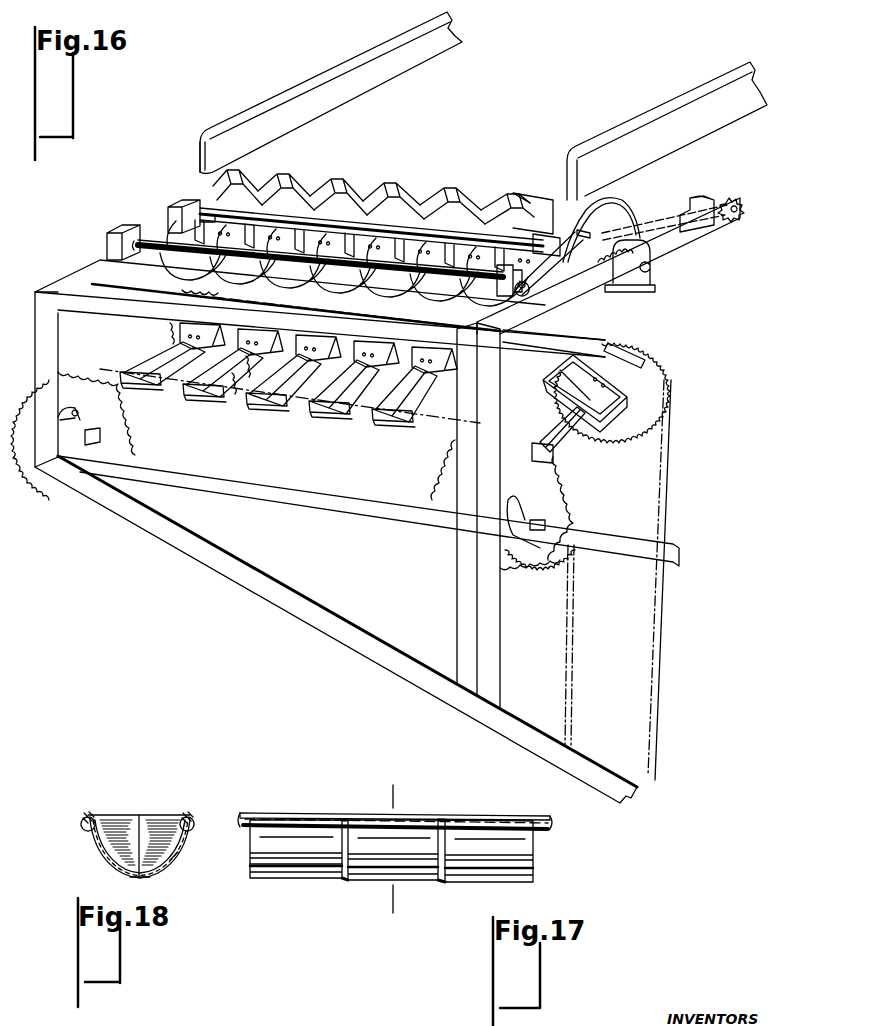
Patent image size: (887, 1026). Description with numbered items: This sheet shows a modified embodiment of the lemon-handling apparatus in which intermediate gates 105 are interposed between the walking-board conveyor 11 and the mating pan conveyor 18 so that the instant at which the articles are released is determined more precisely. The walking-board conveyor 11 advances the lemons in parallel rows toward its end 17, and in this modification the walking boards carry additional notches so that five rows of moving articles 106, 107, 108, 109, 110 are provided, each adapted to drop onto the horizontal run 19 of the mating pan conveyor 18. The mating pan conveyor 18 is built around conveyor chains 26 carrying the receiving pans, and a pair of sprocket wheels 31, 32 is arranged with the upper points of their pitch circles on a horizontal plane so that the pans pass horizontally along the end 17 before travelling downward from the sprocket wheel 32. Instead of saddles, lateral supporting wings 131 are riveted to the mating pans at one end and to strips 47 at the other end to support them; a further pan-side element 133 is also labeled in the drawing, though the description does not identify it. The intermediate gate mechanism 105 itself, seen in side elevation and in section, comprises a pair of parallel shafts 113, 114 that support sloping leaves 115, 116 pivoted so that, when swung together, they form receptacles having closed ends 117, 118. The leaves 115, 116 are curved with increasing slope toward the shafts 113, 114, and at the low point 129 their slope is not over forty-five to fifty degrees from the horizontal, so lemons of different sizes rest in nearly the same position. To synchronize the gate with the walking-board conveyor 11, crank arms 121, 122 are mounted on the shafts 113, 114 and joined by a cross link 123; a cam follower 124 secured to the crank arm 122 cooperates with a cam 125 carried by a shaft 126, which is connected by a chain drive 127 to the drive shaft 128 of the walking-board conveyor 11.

In FIG. 16, the walking-board conveyor 11 is at (303, 72).
In FIG. 16, the end of the walking-board conveyor 17 is at (196, 173).
In FIG. 16, the mating pan conveyor 18 is at (258, 422).
In FIG. 17, the mating pan conveyor 18 is at (393, 785).
In FIG. 16, the horizontal run 19 is at (150, 329).
In FIG. 16, the conveyor chains 26 is at (365, 422).
In FIG. 16, the sprocket wheel 31 is at (30, 455).
In FIG. 16, the sprocket wheel 32 is at (643, 455).
In FIG. 16, the strips 47 is at (412, 424).
In FIG. 16, the intermediate gate 105 is at (165, 226).
In FIG. 17, the intermediate gate 105 is at (250, 857).
In FIG. 16, the row of moving articles 106 is at (270, 184).
In FIG. 16, the row of moving articles 107 is at (318, 183).
In FIG. 16, the row of moving articles 108 is at (372, 188).
In FIG. 16, the row of moving articles 109 is at (432, 195).
In FIG. 16, the row of moving articles 110 is at (498, 203).
In FIG. 16, the shaft 113 is at (163, 252).
In FIG. 17, the shaft 113 is at (395, 821).
In FIG. 18, the shaft 113 is at (82, 811).
In FIG. 16, the shaft 114 is at (192, 204).
In FIG. 18, the shaft 114 is at (192, 812).
In FIG. 17, the sloping leaf 115 is at (468, 862).
In FIG. 18, the sloping leaf 115 is at (100, 848).
In FIG. 18, the sloping leaf 116 is at (176, 857).
In FIG. 17, the closed end 117 is at (248, 866).
In FIG. 17, the closed end 118 is at (345, 880).
In FIG. 16, the crank arm 121 is at (545, 290).
In FIG. 16, the crank arm 122 is at (584, 235).
In FIG. 16, the cross link 123 is at (545, 283).
In FIG. 16, the cam follower 124 is at (592, 220).
In FIG. 16, the cam 125 is at (628, 220).
In FIG. 16, the shaft 126 is at (648, 265).
In FIG. 16, the chain drive 127 is at (718, 232).
In FIG. 16, the drive shaft 128 is at (742, 206).
In FIG. 18, the low point 129 is at (140, 878).
In FIG. 16, the lateral supporting wings 131 is at (415, 403).
In FIG. 16, the bucket 133 is at (555, 372).